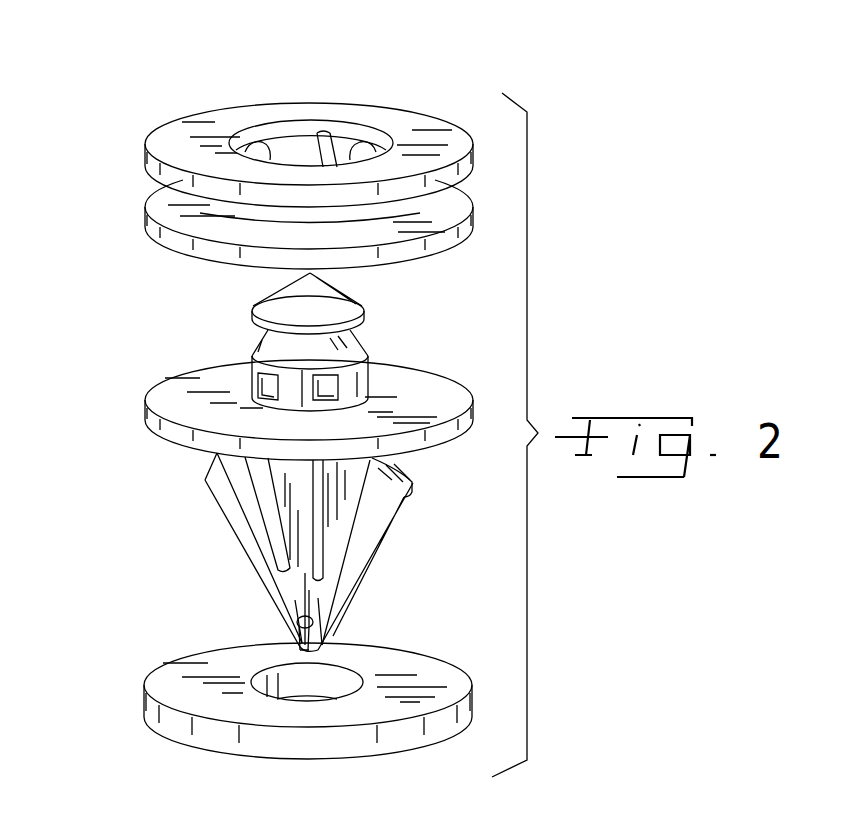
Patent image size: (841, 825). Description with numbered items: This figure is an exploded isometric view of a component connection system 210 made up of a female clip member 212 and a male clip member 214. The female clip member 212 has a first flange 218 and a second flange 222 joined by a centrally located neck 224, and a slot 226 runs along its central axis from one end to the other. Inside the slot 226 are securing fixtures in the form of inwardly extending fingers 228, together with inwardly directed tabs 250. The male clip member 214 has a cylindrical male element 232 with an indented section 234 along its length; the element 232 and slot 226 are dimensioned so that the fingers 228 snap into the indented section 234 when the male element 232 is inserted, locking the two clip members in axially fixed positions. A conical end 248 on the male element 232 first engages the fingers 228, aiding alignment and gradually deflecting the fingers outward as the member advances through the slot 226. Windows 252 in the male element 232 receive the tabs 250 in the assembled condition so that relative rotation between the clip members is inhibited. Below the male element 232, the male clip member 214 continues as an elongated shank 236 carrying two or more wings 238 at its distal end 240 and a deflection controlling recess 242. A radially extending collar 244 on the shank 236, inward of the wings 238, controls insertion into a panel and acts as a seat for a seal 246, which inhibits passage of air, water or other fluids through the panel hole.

The component connection system 210 is at (115, 218).
The female clip member 212 is at (158, 260).
The male clip member 214 is at (156, 367).
The first flange 218 is at (435, 130).
The second flange 222 is at (433, 226).
The neck 224 is at (253, 217).
The slot 226 is at (285, 128).
The fingers 228 is at (327, 133).
The cylindrical male element 232 is at (365, 370).
The indented section 234 is at (348, 337).
The elongated shank 236 is at (297, 527).
The wings 238 is at (228, 490).
The distal end 240 is at (345, 622).
The deflection controlling recess 242 is at (283, 625).
The collar 244 is at (150, 416).
The seal 246 is at (147, 713).
The conical end 248 is at (333, 294).
The tabs 250 is at (257, 147).
The windows 252 is at (257, 383).